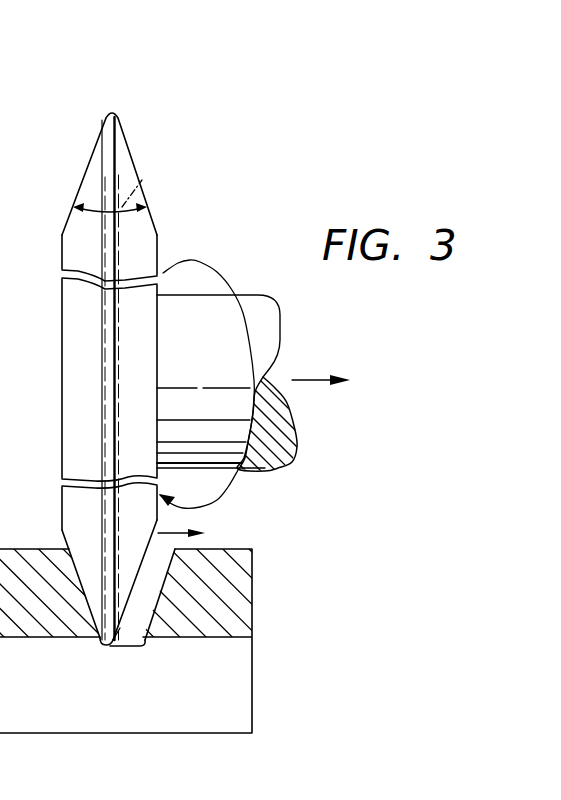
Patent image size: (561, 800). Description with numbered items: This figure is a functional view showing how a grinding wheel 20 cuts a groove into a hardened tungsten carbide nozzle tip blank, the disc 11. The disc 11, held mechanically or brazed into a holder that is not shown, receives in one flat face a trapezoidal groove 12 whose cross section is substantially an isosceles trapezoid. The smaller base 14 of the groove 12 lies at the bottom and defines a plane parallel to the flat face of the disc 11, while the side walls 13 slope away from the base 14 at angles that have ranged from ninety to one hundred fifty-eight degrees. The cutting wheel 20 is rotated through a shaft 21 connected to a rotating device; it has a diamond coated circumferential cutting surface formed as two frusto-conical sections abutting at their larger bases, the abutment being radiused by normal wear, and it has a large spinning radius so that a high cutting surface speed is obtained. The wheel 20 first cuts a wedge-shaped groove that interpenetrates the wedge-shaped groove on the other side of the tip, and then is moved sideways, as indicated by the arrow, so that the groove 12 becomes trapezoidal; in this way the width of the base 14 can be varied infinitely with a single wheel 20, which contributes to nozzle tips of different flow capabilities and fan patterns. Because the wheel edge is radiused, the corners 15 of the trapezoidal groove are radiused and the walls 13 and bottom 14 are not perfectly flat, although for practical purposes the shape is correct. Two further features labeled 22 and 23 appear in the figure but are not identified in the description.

The disc 11 is at (255, 620).
The trapezoidal groove 12 is at (162, 562).
The side walls 13 is at (154, 592).
The smaller base 14 is at (112, 650).
The corners 15 is at (150, 663).
The grinding wheel 20 is at (147, 237).
The shaft 21 is at (257, 307).
The cone angle 22 is at (138, 186).
The cutting edge 23 is at (129, 627).